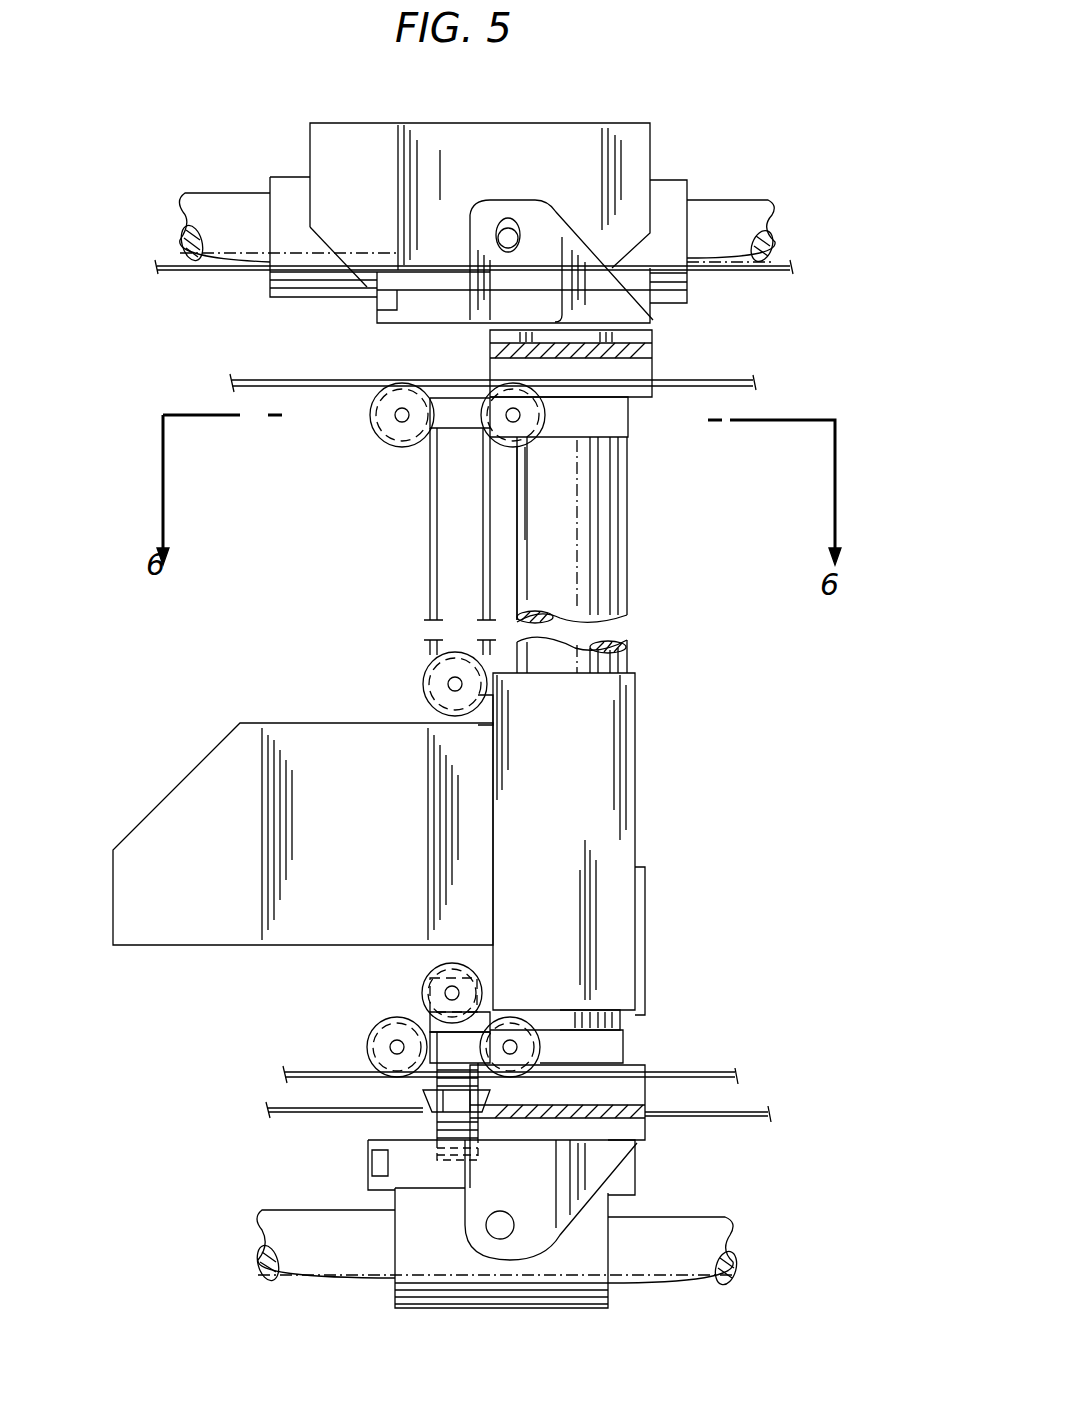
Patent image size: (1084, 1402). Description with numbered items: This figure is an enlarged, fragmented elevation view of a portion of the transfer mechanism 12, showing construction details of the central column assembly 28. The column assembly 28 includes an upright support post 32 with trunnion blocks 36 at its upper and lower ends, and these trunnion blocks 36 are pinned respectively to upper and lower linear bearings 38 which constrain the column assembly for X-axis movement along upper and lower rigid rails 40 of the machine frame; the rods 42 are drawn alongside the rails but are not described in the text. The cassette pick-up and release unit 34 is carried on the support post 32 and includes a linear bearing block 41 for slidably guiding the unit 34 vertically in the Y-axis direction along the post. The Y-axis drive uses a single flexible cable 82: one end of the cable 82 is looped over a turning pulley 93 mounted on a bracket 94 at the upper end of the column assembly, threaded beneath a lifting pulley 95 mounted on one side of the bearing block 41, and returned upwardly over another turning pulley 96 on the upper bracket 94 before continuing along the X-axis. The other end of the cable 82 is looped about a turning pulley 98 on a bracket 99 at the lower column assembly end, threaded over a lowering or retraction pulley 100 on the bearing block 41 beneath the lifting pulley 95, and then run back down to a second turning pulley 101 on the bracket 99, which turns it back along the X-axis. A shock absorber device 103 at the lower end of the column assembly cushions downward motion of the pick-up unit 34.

The transfer mechanism 12 is at (762, 165).
The central column assembly 28 is at (654, 703).
The upright support post 32 is at (618, 562).
The cassette pick-up and release unit 34 is at (178, 803).
The trunnion block 36 is at (528, 205).
The linear bearing 38 is at (660, 192).
The rigid rail 40 is at (750, 218).
The linear bearing block 41 is at (607, 865).
The rod 42 is at (718, 278).
The flexible cable 82 is at (322, 378).
The turning pulley 93 is at (388, 440).
The bracket 94 is at (455, 400).
The lifting pulley 95 is at (437, 686).
The turning pulley 96 is at (545, 415).
The turning pulley 98 is at (402, 1020).
The bracket 99 is at (605, 1052).
The lowering or retraction pulley 100 is at (438, 970).
The second turning pulley 101 is at (580, 1030).
The shock absorber device 103 is at (430, 1073).